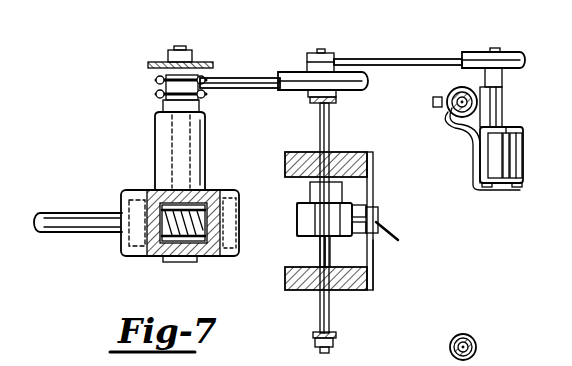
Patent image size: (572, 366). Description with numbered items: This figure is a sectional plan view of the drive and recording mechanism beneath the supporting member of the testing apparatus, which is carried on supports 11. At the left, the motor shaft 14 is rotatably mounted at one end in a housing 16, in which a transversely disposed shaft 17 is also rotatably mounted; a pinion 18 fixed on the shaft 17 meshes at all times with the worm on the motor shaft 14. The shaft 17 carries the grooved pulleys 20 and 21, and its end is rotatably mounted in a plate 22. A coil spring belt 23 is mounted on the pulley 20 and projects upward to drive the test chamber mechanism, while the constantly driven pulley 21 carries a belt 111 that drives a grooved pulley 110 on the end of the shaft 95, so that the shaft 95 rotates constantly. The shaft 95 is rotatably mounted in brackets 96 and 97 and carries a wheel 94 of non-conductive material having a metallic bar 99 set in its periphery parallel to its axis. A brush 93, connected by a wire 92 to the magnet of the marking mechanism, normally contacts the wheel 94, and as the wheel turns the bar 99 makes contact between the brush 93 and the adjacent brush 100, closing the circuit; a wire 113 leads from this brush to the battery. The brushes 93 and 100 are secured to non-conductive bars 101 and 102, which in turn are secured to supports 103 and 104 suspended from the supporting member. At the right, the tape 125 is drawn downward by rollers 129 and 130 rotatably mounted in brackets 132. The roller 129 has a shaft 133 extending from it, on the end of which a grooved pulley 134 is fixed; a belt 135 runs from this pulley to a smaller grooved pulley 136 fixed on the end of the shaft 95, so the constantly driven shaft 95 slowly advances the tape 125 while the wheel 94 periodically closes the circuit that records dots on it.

The supports 11 is at (452, 92).
The motor shaft 14 is at (57, 213).
The housing 16 is at (124, 257).
The shaft 17 is at (172, 142).
The pinion 18 is at (212, 200).
The grooved pulley 20 is at (158, 95).
The grooved pulley 21 is at (156, 70).
The plate 22 is at (194, 60).
The coil spring belt 23 is at (206, 95).
The wire 92 is at (380, 210).
The brush 93 is at (336, 192).
The wheel 94 is at (297, 217).
The shaft 95 is at (322, 49).
The bracket 96 is at (336, 336).
The bracket 97 is at (336, 102).
The metallic bar 99 is at (320, 240).
The brush 100 is at (350, 244).
The non-conductive bar 101 is at (373, 156).
The non-conductive bar 102 is at (373, 266).
The support 103 is at (310, 144).
The support 104 is at (306, 290).
The grooved pulley 110 is at (290, 72).
The belt 111 is at (252, 78).
The wire 113 is at (403, 236).
The tape 125 is at (509, 156).
The roller 129 is at (488, 168).
The roller 130 is at (522, 168).
The brackets 132 is at (474, 140).
The shaft 133 is at (502, 96).
The grooved pulley 134 is at (516, 52).
The belt 135 is at (450, 59).
The grooved pulley 136 is at (334, 56).